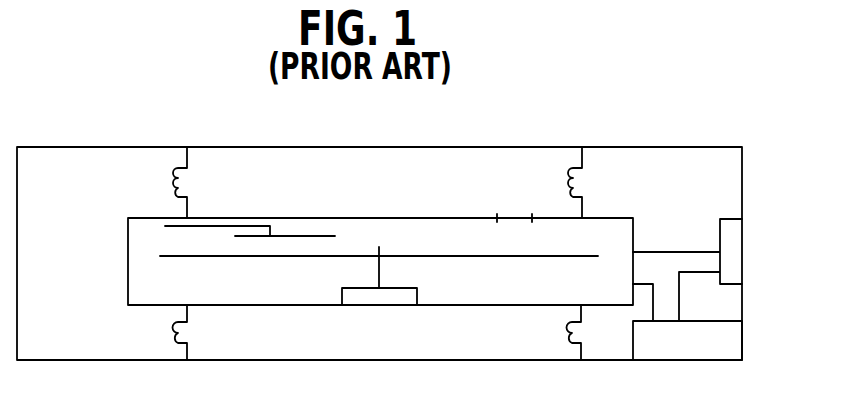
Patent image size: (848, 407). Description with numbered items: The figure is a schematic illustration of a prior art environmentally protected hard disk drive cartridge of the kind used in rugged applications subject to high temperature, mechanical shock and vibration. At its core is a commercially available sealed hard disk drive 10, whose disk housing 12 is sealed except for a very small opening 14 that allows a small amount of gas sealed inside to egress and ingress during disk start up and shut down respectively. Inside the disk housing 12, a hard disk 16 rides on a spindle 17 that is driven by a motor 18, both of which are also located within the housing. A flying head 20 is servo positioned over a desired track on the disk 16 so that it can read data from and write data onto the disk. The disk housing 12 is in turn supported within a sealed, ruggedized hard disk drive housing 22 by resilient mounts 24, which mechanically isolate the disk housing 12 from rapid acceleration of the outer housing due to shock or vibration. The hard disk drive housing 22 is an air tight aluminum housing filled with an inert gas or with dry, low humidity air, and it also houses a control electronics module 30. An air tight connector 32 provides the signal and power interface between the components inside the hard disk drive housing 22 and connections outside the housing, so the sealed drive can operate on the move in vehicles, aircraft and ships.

The sealed hard disk drive 10 is at (412, 252).
The disk housing 12 is at (405, 218).
The opening 14 is at (510, 218).
The hard disk 16 is at (527, 257).
The spindle 17 is at (382, 265).
The motor 18 is at (340, 296).
The flying head 20 is at (301, 236).
The hard disk drive housing 22 is at (352, 147).
The resilient mounts 24 is at (181, 182).
The control electronics module 30 is at (700, 348).
The air tight connector 32 is at (728, 273).